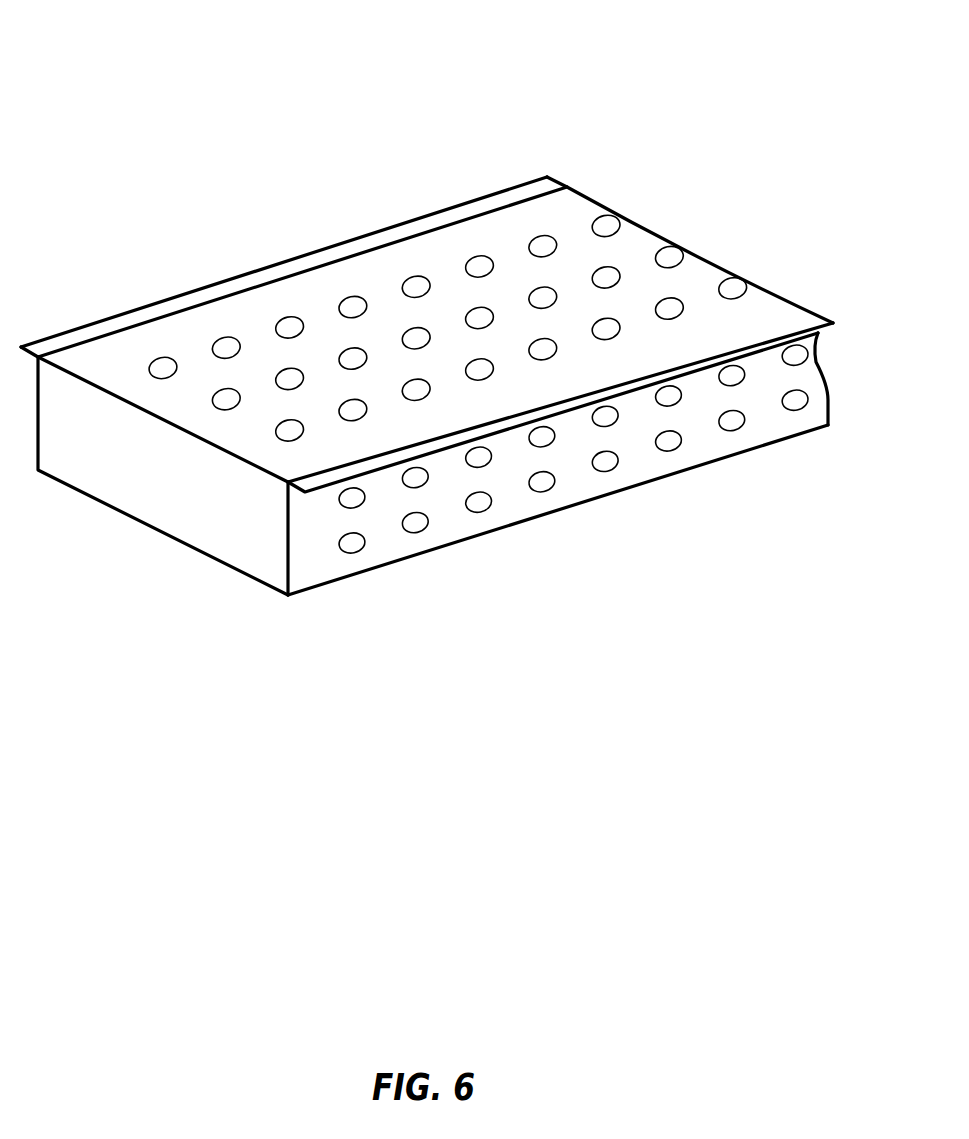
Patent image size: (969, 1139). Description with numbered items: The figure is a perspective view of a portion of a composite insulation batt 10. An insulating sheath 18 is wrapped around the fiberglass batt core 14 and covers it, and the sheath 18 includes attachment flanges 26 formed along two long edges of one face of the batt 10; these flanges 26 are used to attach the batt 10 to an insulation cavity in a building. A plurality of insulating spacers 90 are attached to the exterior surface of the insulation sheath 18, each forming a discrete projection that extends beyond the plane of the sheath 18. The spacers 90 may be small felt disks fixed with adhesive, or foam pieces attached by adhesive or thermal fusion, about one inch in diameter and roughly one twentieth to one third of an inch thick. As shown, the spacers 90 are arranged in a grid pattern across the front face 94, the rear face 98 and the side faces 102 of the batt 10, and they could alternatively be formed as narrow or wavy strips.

The composite insulation batt 10 is at (540, 207).
The fiberglass batt core 14 is at (368, 278).
The insulating sheath 18 is at (702, 432).
The attachment flanges 26 is at (232, 285).
The insulating spacers 90 is at (163, 368).
The front face 94 is at (308, 293).
The rear face 98 is at (547, 520).
The side faces 102 is at (390, 230).